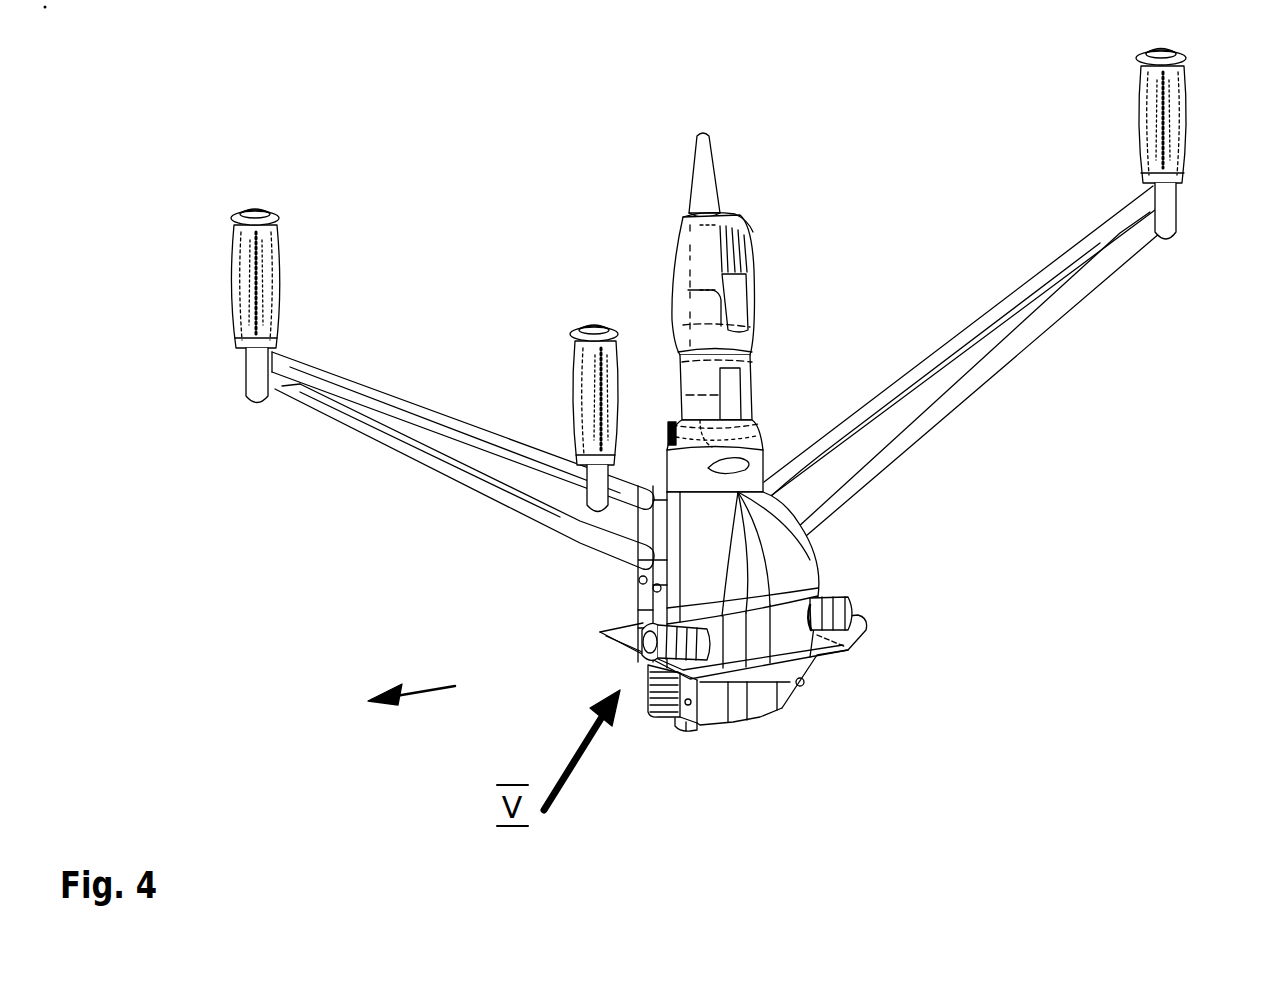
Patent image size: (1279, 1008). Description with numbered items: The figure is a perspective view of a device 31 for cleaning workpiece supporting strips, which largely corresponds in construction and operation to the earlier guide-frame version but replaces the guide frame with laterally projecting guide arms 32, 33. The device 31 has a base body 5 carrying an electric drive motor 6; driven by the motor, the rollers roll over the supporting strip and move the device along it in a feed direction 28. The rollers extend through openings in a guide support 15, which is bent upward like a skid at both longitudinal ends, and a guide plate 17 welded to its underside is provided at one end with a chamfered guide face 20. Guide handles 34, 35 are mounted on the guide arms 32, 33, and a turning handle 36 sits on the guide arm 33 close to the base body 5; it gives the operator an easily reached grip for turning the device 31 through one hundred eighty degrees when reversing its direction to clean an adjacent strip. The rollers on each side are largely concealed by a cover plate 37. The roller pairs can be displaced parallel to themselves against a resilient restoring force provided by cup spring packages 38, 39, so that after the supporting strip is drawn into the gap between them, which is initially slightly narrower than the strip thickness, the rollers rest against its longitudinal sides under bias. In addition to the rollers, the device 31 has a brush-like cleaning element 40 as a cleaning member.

The base body 5 is at (812, 440).
The electric drive motor 6 is at (743, 313).
The guide support 15 is at (866, 639).
The guide plate 17 is at (693, 732).
The chamfered guide face 20 is at (822, 683).
The feed direction 28 is at (420, 680).
The device for cleaning supporting strips 31 is at (750, 162).
The guide arm 32 is at (972, 389).
The guide arm 33 is at (400, 448).
The guide handle 34 is at (1176, 122).
The guide handle 35 is at (240, 280).
The turning handle 36 is at (580, 380).
The cover plate 37 is at (788, 708).
The cup spring package 38 is at (804, 600).
The cup spring package 39 is at (640, 630).
The brush-like cleaning element 40 is at (659, 733).